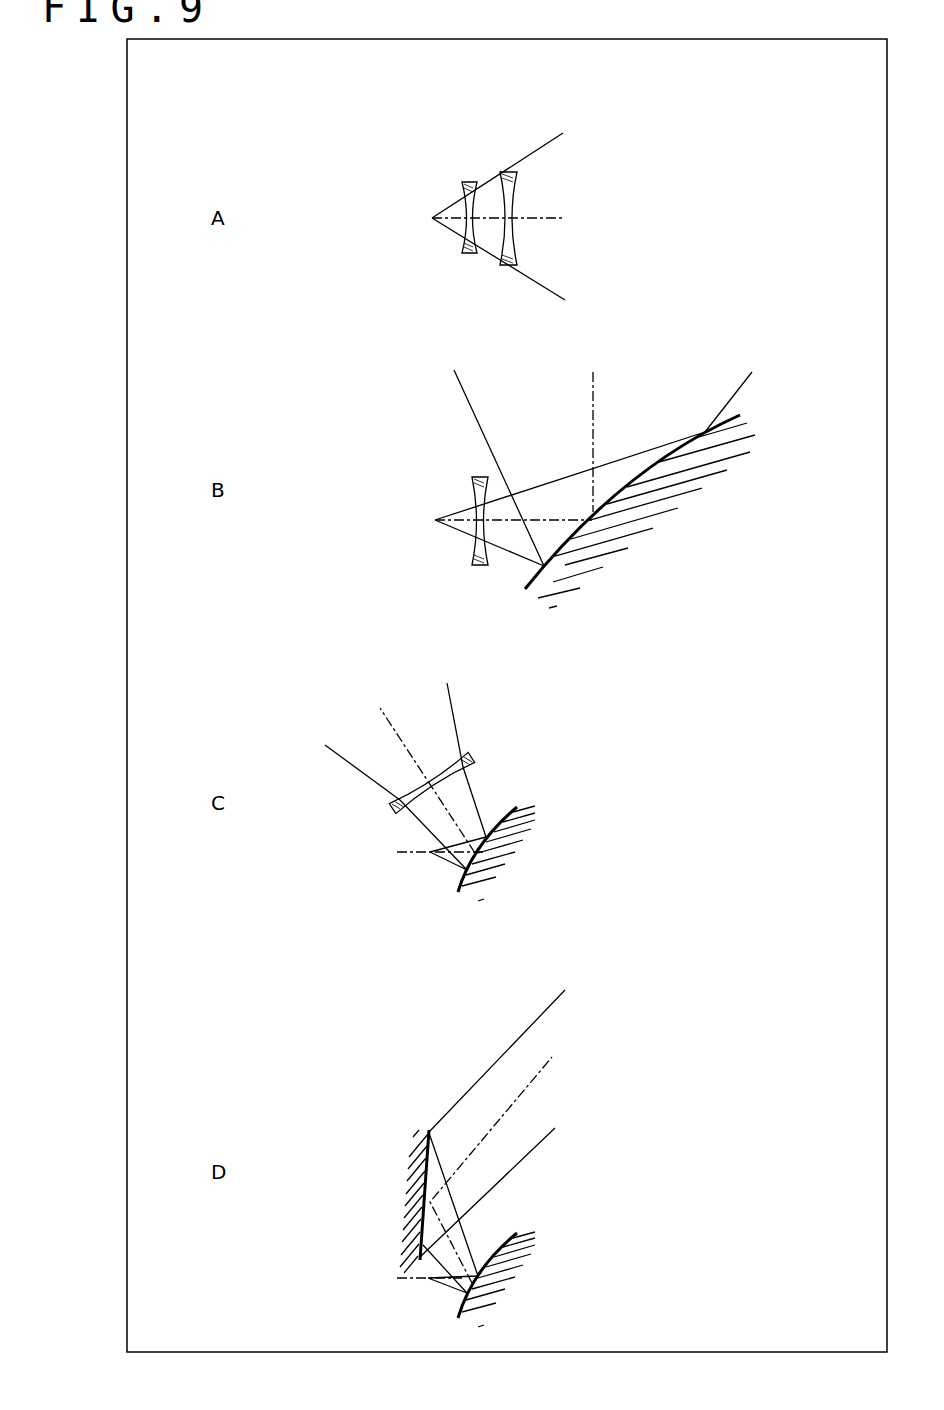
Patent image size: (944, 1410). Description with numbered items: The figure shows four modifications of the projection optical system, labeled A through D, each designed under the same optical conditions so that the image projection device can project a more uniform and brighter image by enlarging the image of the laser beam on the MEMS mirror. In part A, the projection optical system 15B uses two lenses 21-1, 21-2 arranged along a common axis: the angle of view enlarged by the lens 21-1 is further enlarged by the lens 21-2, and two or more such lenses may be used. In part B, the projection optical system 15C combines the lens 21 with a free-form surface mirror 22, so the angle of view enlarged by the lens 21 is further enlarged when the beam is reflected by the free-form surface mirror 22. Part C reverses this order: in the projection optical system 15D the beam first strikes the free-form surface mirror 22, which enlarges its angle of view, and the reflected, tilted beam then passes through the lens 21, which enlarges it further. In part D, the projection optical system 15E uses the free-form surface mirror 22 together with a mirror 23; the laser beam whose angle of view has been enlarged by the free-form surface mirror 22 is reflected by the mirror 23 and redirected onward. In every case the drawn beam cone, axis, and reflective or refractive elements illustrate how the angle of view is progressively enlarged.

The projection optical system 15B is at (494, 181).
The projection optical system 15C is at (593, 437).
The projection optical system 15D is at (429, 767).
The projection optical system 15E is at (494, 1113).
The lens 21 is at (472, 492).
The lens 21-1 is at (463, 195).
The lens 21-2 is at (503, 170).
The free-form surface mirror 22 is at (742, 417).
The mirror 23 is at (432, 1128).